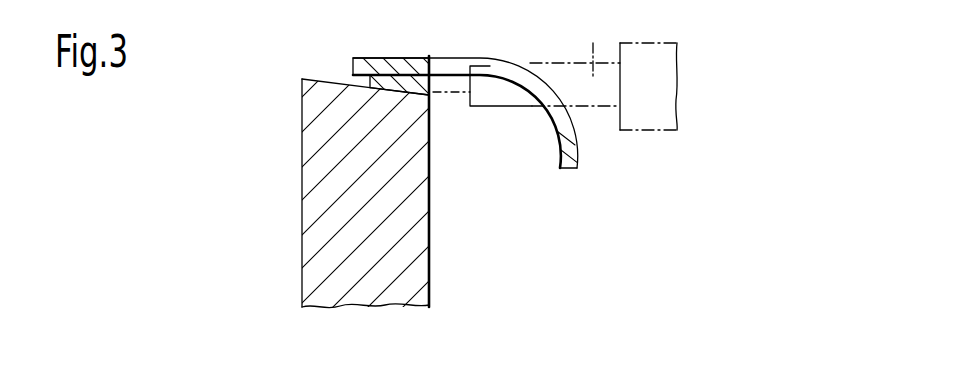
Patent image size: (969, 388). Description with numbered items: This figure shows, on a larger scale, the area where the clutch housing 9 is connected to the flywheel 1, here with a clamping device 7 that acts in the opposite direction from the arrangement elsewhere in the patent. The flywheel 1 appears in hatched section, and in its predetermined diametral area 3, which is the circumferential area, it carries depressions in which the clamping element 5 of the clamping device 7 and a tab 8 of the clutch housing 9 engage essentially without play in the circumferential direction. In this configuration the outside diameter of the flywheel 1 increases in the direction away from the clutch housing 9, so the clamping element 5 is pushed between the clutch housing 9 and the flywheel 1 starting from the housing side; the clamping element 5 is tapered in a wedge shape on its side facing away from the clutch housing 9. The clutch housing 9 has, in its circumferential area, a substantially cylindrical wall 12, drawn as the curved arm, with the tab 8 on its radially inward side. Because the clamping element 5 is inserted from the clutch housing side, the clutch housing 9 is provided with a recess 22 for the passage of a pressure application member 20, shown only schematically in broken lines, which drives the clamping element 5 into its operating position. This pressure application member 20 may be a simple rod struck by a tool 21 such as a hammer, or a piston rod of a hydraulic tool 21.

The flywheel 1 is at (307, 202).
The diametral area 3 is at (302, 79).
The clamping element 5 is at (370, 78).
The clamping device 7 is at (403, 97).
The tab 8 is at (402, 62).
The clutch housing 9 is at (577, 157).
The cylindrical wall 12 is at (463, 60).
The pressure application member 20 is at (600, 37).
The pressure device or tool 21 is at (670, 68).
The recess 22 is at (525, 93).